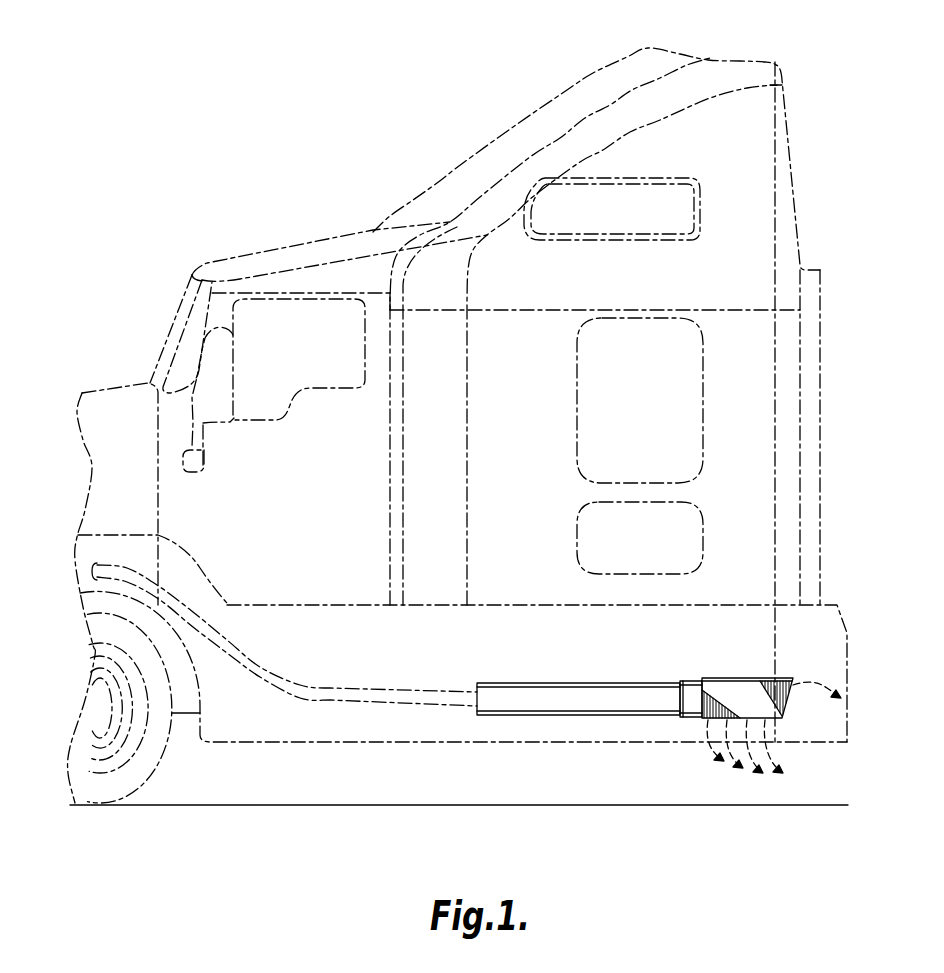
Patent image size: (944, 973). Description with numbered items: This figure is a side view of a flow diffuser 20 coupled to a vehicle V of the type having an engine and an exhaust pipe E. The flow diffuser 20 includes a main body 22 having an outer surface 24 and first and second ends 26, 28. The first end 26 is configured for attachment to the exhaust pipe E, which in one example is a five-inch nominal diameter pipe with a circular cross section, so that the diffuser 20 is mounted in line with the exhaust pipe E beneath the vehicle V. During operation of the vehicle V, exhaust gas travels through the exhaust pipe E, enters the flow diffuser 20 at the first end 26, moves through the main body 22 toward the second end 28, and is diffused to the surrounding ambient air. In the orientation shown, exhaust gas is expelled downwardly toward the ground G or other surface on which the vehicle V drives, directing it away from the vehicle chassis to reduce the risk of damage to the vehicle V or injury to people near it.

The vehicle V is at (272, 250).
The exhaust pipe E is at (517, 715).
The ground G is at (343, 805).
The flow diffuser 20 is at (769, 698).
The main body 22 is at (765, 688).
The outer surface 24 is at (738, 703).
The first end 26 is at (690, 717).
The second end 28 is at (788, 718).